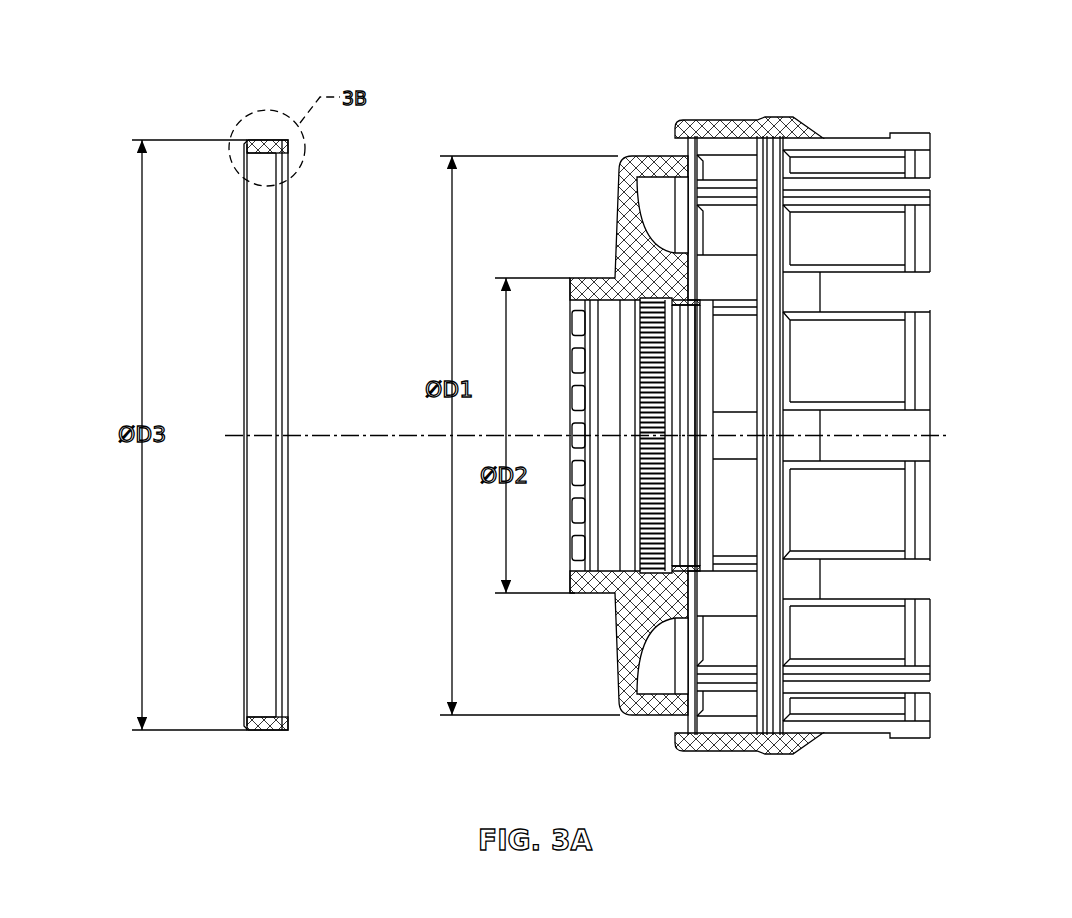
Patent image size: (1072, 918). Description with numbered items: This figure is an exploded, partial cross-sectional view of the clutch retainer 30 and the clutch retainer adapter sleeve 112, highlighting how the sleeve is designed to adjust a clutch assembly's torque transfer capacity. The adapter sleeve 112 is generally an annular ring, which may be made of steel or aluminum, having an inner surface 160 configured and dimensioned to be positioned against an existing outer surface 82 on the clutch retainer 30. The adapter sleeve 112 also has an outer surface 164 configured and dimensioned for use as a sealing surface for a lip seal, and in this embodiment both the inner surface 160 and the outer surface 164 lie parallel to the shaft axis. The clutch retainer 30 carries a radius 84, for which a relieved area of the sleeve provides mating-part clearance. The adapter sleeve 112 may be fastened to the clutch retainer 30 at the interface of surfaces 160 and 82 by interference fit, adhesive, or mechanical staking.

The clutch retainer 30 is at (802, 427).
The outer surface 82 is at (648, 156).
The radius 84 is at (668, 718).
The clutch retainer adapter sleeve 112 is at (274, 386).
The inner surface 160 is at (258, 715).
The outer surface 164 is at (263, 140).